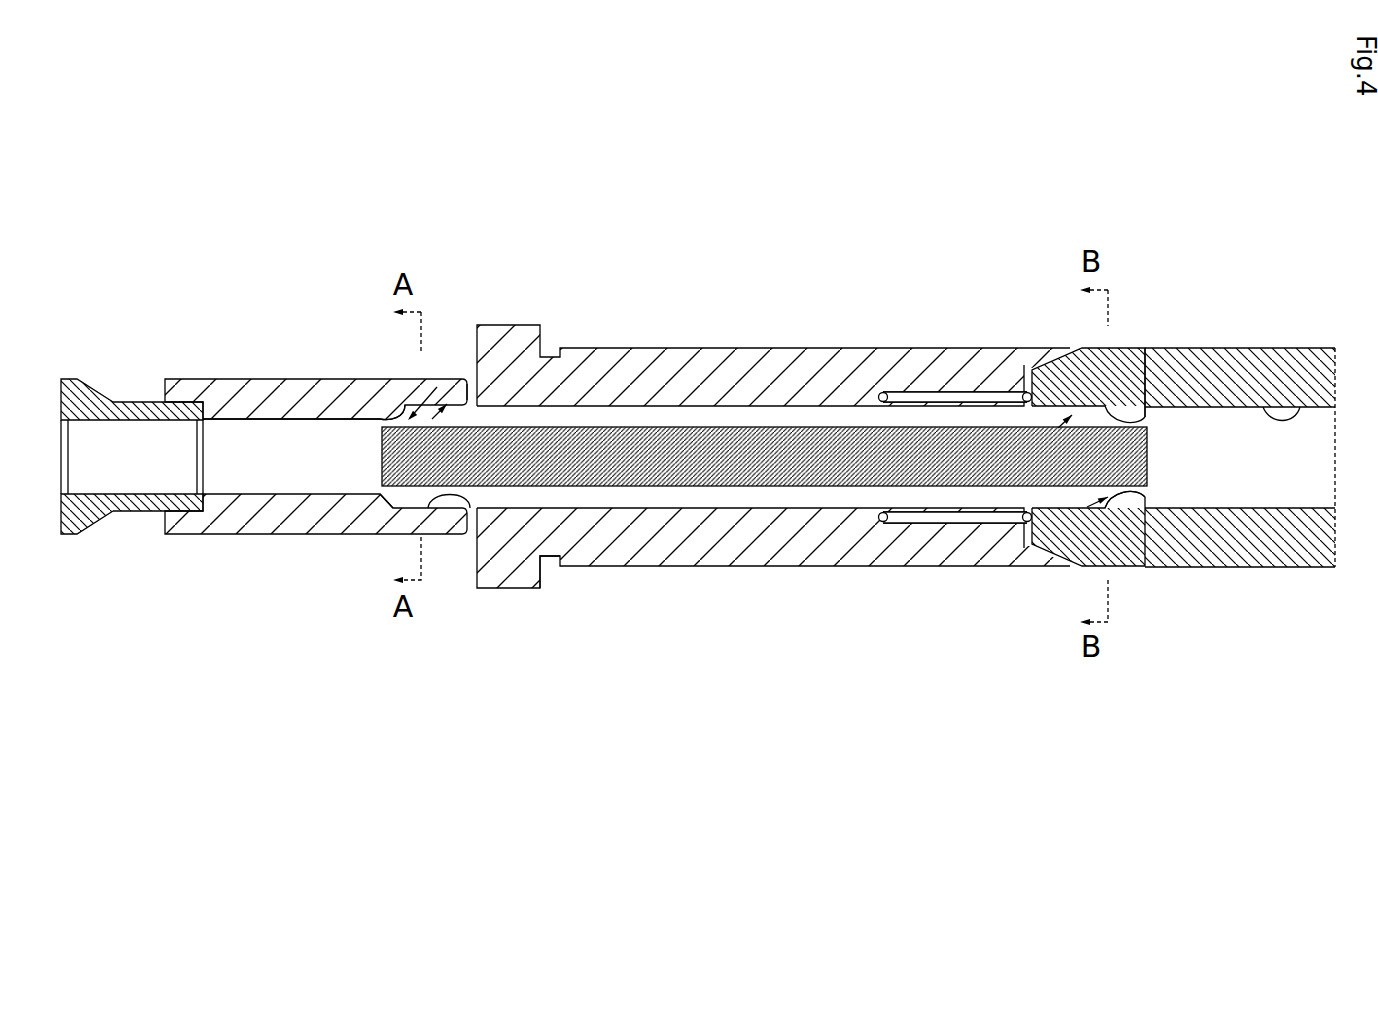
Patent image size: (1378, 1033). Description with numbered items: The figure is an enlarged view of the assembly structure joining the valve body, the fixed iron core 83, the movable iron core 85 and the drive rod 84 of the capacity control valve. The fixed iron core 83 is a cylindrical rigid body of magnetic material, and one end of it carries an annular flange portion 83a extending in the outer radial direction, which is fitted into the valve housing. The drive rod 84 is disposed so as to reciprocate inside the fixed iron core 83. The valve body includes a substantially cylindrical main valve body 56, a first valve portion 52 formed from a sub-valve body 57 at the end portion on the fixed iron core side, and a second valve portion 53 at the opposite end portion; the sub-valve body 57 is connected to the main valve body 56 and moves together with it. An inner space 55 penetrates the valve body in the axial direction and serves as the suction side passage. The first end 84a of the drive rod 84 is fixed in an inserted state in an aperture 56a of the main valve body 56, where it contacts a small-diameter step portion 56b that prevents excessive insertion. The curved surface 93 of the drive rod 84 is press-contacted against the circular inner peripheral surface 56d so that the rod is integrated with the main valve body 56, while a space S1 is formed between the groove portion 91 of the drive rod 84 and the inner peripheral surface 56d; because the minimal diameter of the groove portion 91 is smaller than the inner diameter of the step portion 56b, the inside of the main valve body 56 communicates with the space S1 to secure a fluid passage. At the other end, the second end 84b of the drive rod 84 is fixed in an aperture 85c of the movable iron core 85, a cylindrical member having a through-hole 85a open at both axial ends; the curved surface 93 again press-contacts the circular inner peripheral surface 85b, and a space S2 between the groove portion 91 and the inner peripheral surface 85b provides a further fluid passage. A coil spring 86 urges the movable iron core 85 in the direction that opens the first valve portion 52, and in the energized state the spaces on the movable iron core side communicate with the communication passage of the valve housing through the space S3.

The first valve portion 52 is at (162, 378).
The second valve portion 53 is at (492, 420).
The inner space 55 is at (280, 420).
The main valve body 56 is at (323, 395).
The aperture 56a is at (447, 403).
The small-diameter step portion 56b is at (397, 402).
The inner peripheral surface 56d is at (470, 508).
The sub-valve body 57 is at (103, 373).
The fixed iron core 83 is at (627, 550).
The flange portion 83a is at (520, 570).
The drive rod 84 is at (985, 486).
The first end 84a is at (357, 535).
The second end 84b is at (1140, 508).
The movable iron core 85 is at (1268, 547).
The through-hole 85a is at (1283, 406).
The inner peripheral surface 85b is at (1143, 417).
The aperture 85c is at (1027, 428).
The coil spring 86 is at (938, 527).
The groove portion 91 is at (778, 397).
The curved surface 93 is at (1055, 370).
The space S1 is at (437, 387).
The space S2 is at (1087, 507).
The space S3 is at (707, 397).